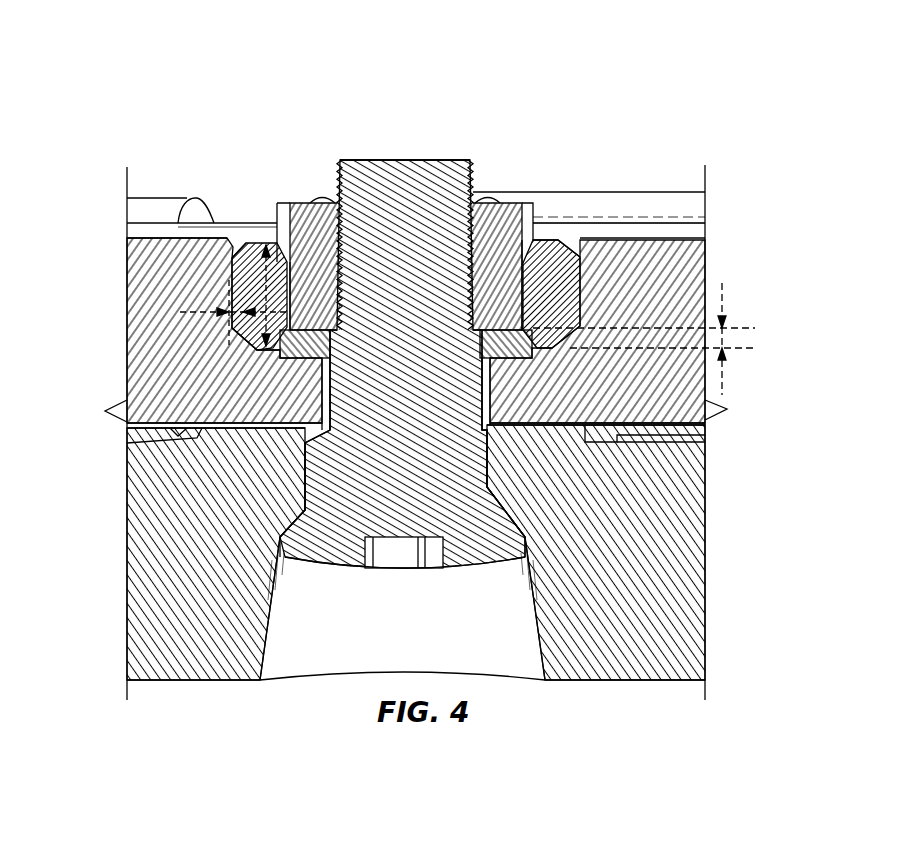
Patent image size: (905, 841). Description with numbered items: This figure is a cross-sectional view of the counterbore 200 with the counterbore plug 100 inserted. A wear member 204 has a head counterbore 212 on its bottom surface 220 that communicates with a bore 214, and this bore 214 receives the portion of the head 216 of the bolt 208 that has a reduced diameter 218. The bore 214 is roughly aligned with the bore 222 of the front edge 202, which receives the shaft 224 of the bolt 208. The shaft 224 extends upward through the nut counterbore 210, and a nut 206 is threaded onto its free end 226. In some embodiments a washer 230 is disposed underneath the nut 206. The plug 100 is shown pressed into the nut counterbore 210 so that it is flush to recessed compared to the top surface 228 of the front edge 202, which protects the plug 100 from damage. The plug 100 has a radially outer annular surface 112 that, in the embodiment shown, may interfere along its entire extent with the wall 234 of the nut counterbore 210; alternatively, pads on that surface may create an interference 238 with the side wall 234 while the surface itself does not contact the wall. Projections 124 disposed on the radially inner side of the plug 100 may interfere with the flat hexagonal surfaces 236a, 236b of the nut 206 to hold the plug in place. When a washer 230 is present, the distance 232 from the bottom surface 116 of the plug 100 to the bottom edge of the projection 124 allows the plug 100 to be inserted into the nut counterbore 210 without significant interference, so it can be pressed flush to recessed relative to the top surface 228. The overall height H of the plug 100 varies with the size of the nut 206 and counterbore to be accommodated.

The counterbore 200 is at (648, 66).
The front edge 202 is at (694, 221).
The wear member 204 is at (692, 645).
The nut 206 is at (487, 203).
The bolt 208 is at (415, 175).
The nut counterbore 210 is at (576, 247).
The head counterbore 212 is at (402, 608).
The bore 214 is at (488, 470).
The head 216 is at (478, 547).
The reduced diameter 218 is at (323, 477).
The bottom surface 220 is at (571, 682).
The bore 222 is at (497, 397).
The shaft 224 is at (406, 394).
The free end 226 is at (366, 159).
The top surface 228 is at (653, 228).
The washer 230 is at (318, 372).
The distance 232 is at (725, 298).
The wall 234 is at (237, 253).
The flat hexagonal surface 236a is at (530, 212).
The flat hexagonal surface 236b is at (280, 218).
The interference 238 is at (200, 310).
The counterbore plug 100 is at (567, 287).
The radially outer annular surface 112 is at (230, 273).
The bottom surface 116 is at (257, 357).
The projection 124 is at (292, 292).
The overall height H is at (272, 283).